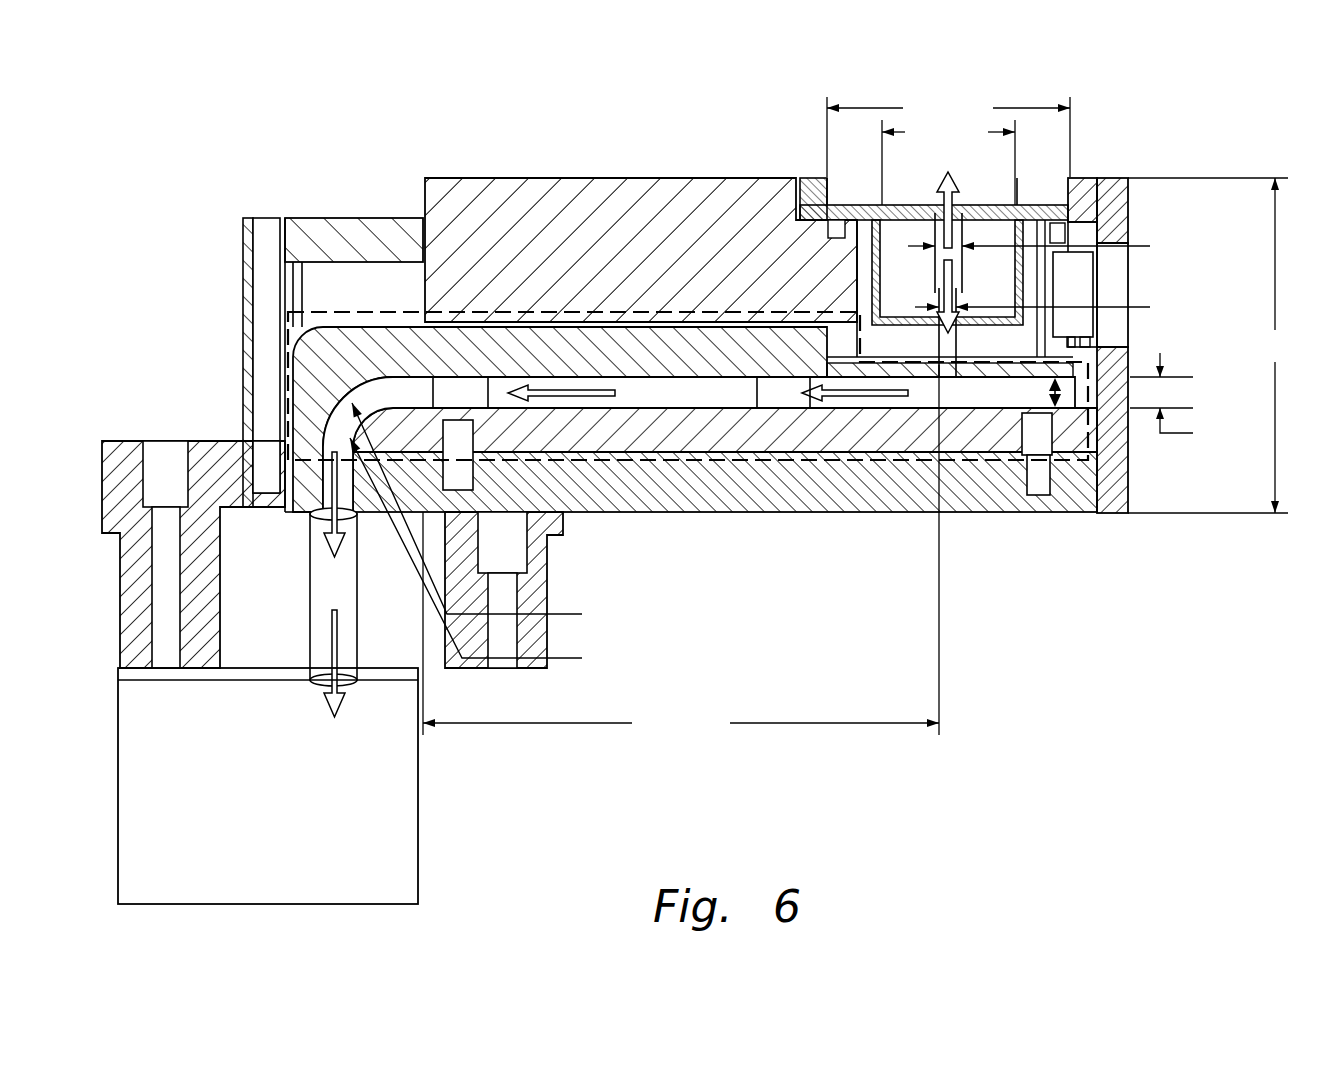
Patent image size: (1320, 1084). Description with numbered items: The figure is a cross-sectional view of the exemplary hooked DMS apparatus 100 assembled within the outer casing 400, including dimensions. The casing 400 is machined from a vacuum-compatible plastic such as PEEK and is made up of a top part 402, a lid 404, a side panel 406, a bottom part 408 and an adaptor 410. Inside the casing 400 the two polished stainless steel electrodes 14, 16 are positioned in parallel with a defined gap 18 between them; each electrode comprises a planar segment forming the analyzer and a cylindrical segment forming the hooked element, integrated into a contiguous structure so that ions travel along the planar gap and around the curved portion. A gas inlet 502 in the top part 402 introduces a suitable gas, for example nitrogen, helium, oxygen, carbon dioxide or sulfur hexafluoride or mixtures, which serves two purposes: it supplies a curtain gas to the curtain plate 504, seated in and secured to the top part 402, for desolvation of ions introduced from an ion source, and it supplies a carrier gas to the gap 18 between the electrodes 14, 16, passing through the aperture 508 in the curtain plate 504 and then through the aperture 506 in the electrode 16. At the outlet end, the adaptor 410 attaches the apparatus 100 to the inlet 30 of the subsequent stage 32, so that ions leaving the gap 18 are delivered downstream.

The outer casing 400 is at (221, 128).
The top part 402 is at (456, 231).
The lid 404 is at (381, 252).
The side panel 406 is at (1110, 513).
The bottom part 408 is at (737, 493).
The adaptor 410 is at (247, 480).
The electrode 14 is at (417, 446).
The electrode 16 is at (328, 369).
The gap 18 is at (1103, 390).
The inlet 30 is at (352, 690).
The subsequent stage 32 is at (285, 833).
The hooked DMS apparatus 100 is at (1035, 462).
The gas inlet 502 is at (1130, 278).
The curtain plate 504 is at (1084, 180).
The aperture 506 is at (946, 338).
The aperture 508 is at (936, 213).